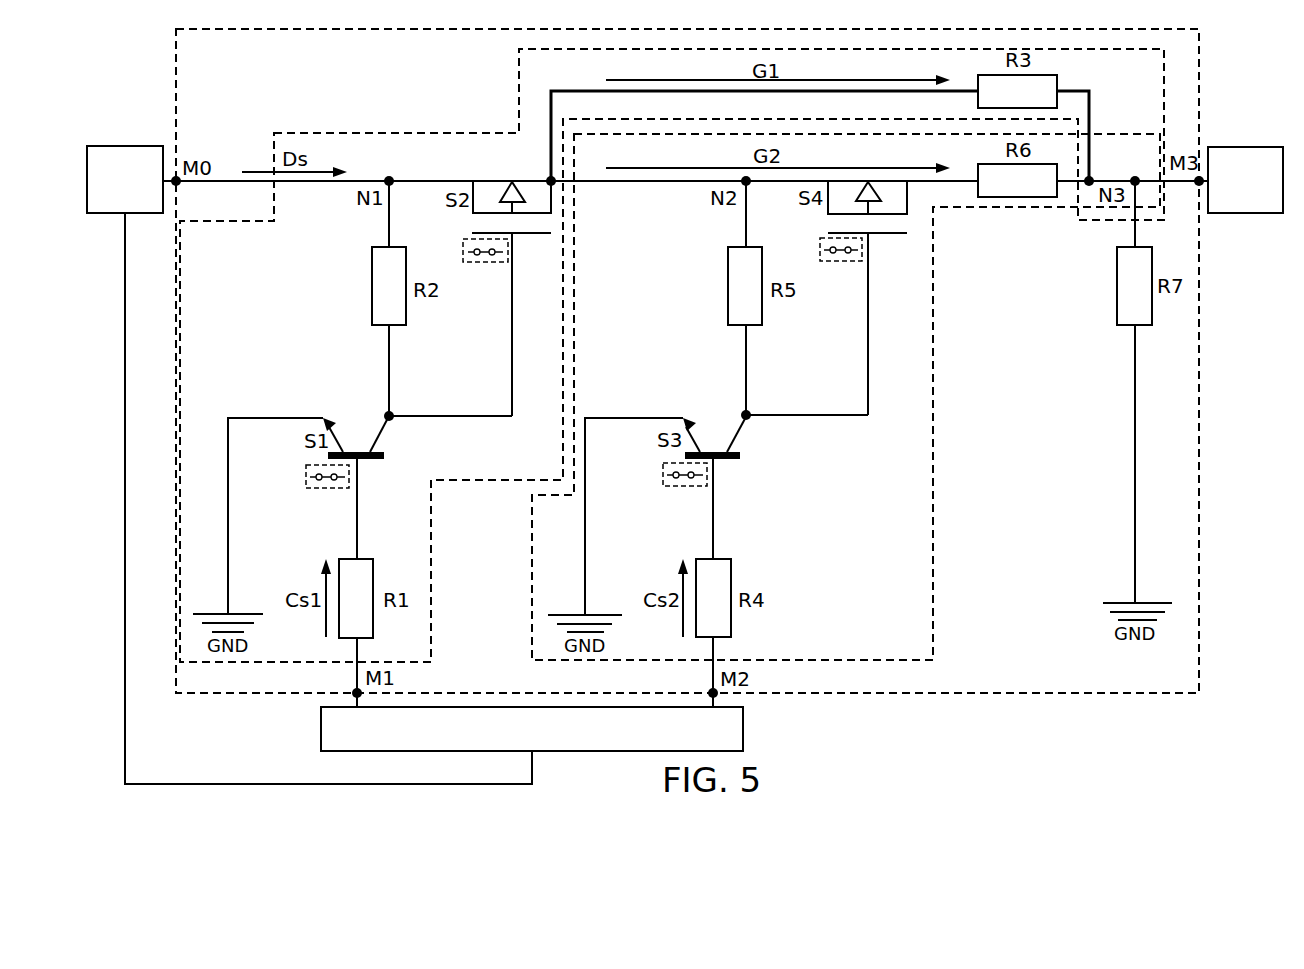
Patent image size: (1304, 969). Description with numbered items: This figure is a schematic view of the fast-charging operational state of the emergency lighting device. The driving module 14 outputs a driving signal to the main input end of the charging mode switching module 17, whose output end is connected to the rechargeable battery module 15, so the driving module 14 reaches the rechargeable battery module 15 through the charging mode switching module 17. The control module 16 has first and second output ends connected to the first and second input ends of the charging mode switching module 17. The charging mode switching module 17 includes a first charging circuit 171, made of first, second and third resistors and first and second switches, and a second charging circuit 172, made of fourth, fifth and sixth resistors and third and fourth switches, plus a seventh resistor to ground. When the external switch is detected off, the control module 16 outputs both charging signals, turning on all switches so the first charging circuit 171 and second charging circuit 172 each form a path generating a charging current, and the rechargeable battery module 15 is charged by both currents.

The driving module 14 is at (130, 146).
The rechargeable battery module 15 is at (1232, 147).
The control module 16 is at (743, 722).
The charging mode switching module 17 is at (988, 693).
The first charging circuit 171 is at (519, 110).
The second charging circuit 172 is at (933, 385).